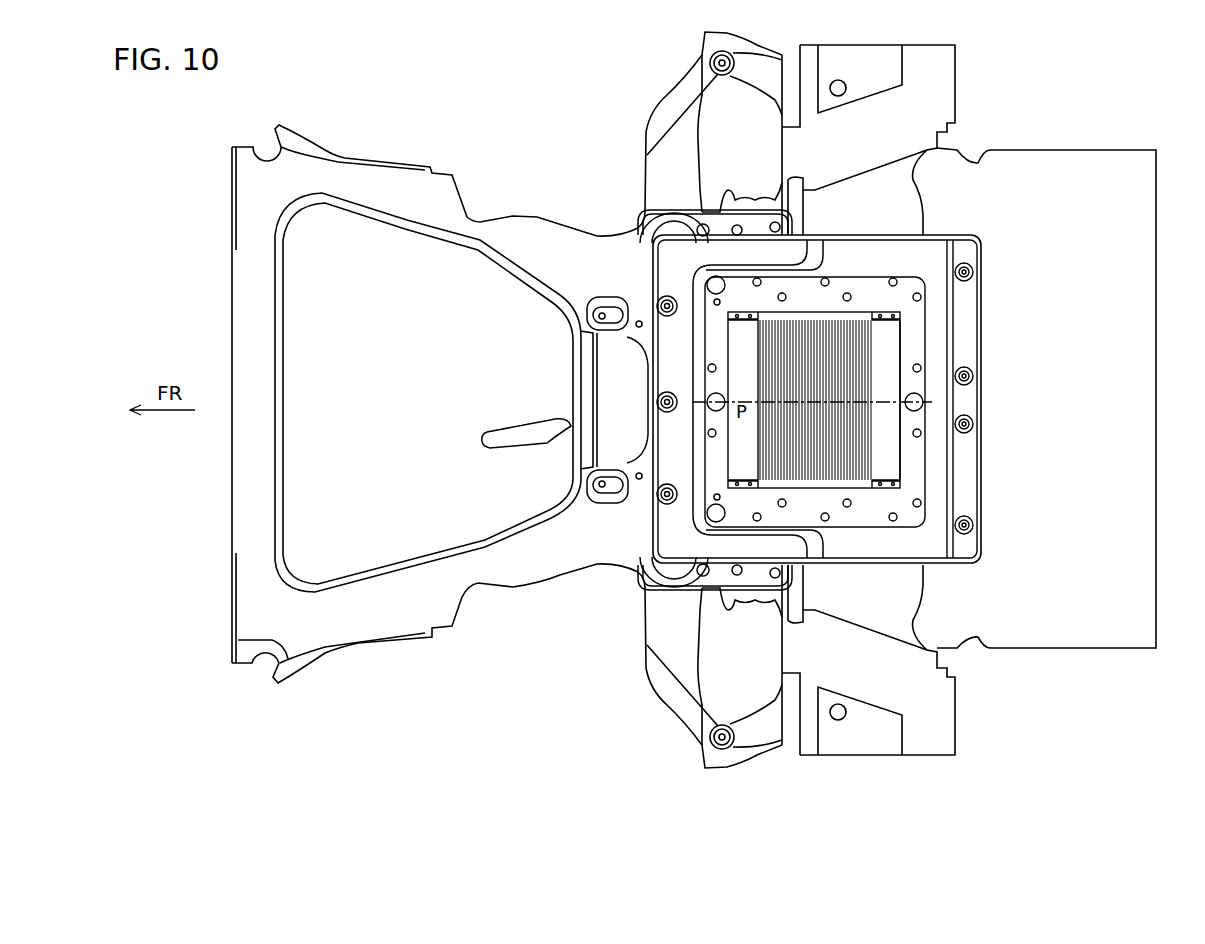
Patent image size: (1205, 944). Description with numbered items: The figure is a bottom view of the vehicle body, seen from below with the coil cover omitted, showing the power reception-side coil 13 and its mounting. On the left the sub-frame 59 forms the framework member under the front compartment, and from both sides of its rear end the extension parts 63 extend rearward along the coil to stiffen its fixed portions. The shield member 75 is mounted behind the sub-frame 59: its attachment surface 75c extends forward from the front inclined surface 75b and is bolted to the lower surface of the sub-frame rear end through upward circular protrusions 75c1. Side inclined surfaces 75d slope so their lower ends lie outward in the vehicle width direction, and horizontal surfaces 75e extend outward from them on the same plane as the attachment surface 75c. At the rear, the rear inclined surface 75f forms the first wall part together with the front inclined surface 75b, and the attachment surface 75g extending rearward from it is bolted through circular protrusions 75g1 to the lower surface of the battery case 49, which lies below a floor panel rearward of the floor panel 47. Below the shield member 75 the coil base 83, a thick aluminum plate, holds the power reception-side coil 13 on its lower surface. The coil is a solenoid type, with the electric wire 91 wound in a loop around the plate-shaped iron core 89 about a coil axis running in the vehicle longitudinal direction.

The power reception-side coil 13 is at (917, 461).
The floor panel 47 is at (940, 80).
The battery case 49 is at (1077, 158).
The sub-frame 59 is at (402, 165).
The extension parts 63 is at (718, 253).
The shield member 75 is at (997, 330).
The front inclined surface 75b is at (690, 352).
The attachment surface 75c is at (650, 441).
The circular protrusions 75c1 is at (658, 300).
The side inclined surfaces 75d is at (653, 222).
The horizontal surfaces 75e is at (700, 228).
The rear inclined surface 75f is at (985, 512).
The attachment surface 75g is at (967, 488).
The circular protrusions 75g1 is at (975, 272).
The coil base 83 is at (925, 478).
The iron core 89 is at (893, 357).
The electric wire 91 is at (858, 487).